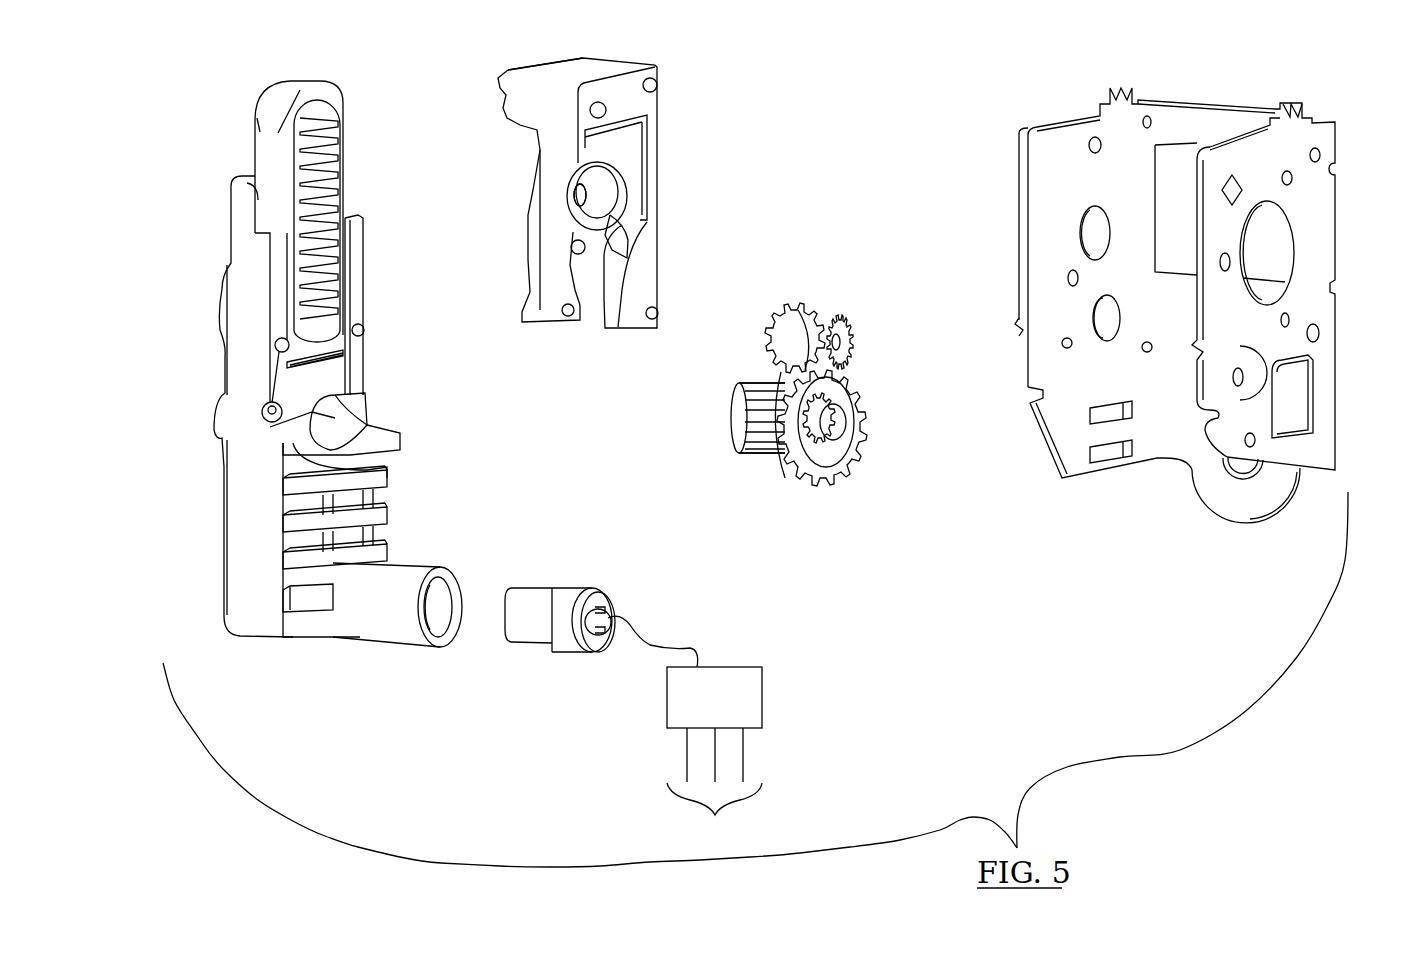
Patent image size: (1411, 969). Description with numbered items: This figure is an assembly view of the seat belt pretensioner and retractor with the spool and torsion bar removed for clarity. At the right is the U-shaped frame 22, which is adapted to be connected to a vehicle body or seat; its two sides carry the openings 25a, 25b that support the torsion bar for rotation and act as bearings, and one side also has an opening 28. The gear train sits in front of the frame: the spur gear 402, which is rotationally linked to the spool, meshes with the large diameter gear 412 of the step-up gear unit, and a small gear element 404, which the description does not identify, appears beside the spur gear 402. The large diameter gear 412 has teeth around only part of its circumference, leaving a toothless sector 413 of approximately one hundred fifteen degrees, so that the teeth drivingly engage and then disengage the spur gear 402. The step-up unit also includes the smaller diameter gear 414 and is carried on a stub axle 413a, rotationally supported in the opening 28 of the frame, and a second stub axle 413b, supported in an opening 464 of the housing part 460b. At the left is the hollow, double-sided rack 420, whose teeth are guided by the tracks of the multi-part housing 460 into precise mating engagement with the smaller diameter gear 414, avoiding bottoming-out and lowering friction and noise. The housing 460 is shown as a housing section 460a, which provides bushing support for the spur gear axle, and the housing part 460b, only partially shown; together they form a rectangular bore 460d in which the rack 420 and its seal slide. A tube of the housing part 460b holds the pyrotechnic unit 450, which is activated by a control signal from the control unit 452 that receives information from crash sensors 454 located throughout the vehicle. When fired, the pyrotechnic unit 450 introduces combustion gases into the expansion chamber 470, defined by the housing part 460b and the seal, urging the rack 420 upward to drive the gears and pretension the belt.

The U-shaped frame 22 is at (1166, 472).
The opening 25a is at (1082, 242).
The opening 25b is at (1280, 232).
The opening 28 is at (1110, 333).
The spur gear 402 is at (808, 300).
The gear 404 is at (832, 320).
The large diameter gear 412 is at (825, 487).
The sector 413 is at (783, 452).
The stub axle 413a is at (837, 425).
The second stub axle 413b is at (728, 405).
The smaller diameter gear 414 is at (765, 453).
The rack 420 is at (245, 143).
The pyrotechnic unit 450 is at (525, 645).
The control unit 452 is at (720, 688).
The crash sensors 454 is at (714, 788).
The multi-part housing 460 is at (668, 108).
The housing section 460a is at (556, 58).
The housing part 460b is at (250, 607).
The rectangular bore 460d is at (323, 400).
The opening 464 is at (578, 200).
The expansion chamber 470 is at (327, 380).